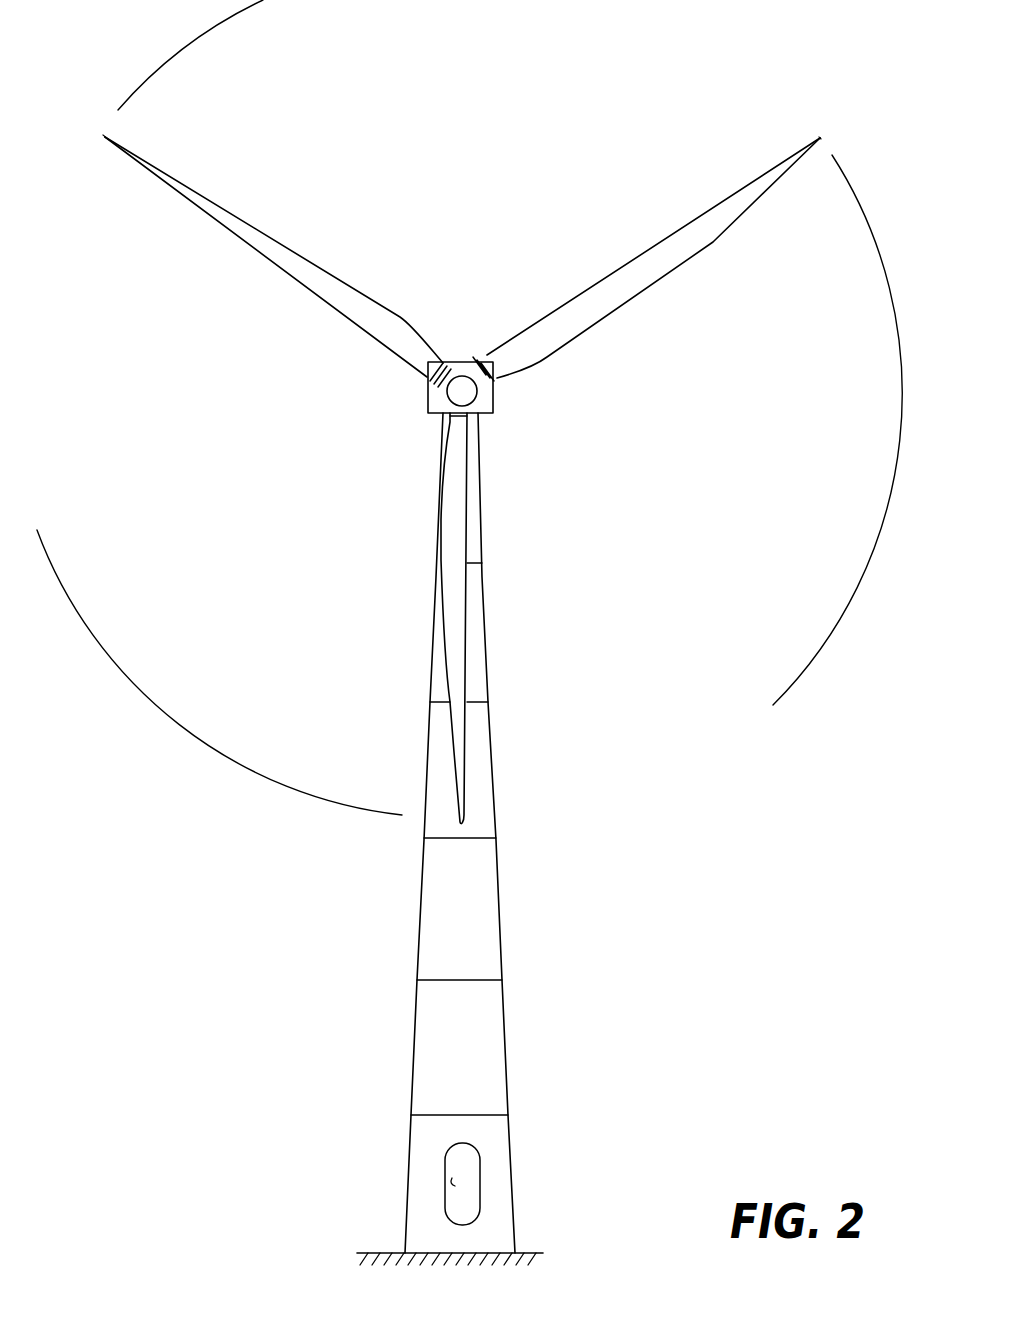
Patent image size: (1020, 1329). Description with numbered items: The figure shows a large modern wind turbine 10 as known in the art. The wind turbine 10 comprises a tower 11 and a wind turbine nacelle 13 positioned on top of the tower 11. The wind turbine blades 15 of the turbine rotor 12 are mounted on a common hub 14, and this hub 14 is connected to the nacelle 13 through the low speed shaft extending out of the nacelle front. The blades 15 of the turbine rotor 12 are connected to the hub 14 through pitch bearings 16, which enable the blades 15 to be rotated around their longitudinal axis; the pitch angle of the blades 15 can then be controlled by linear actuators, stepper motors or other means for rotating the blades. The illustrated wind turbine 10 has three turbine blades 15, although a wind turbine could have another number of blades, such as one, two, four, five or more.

The wind turbine 10 is at (397, 1055).
The tower 11 is at (490, 920).
The turbine rotor 12 is at (385, 395).
The wind turbine nacelle 13 is at (494, 404).
The hub 14 is at (459, 387).
The wind turbine blades 15 is at (460, 662).
The pitch bearings 16 is at (491, 356).